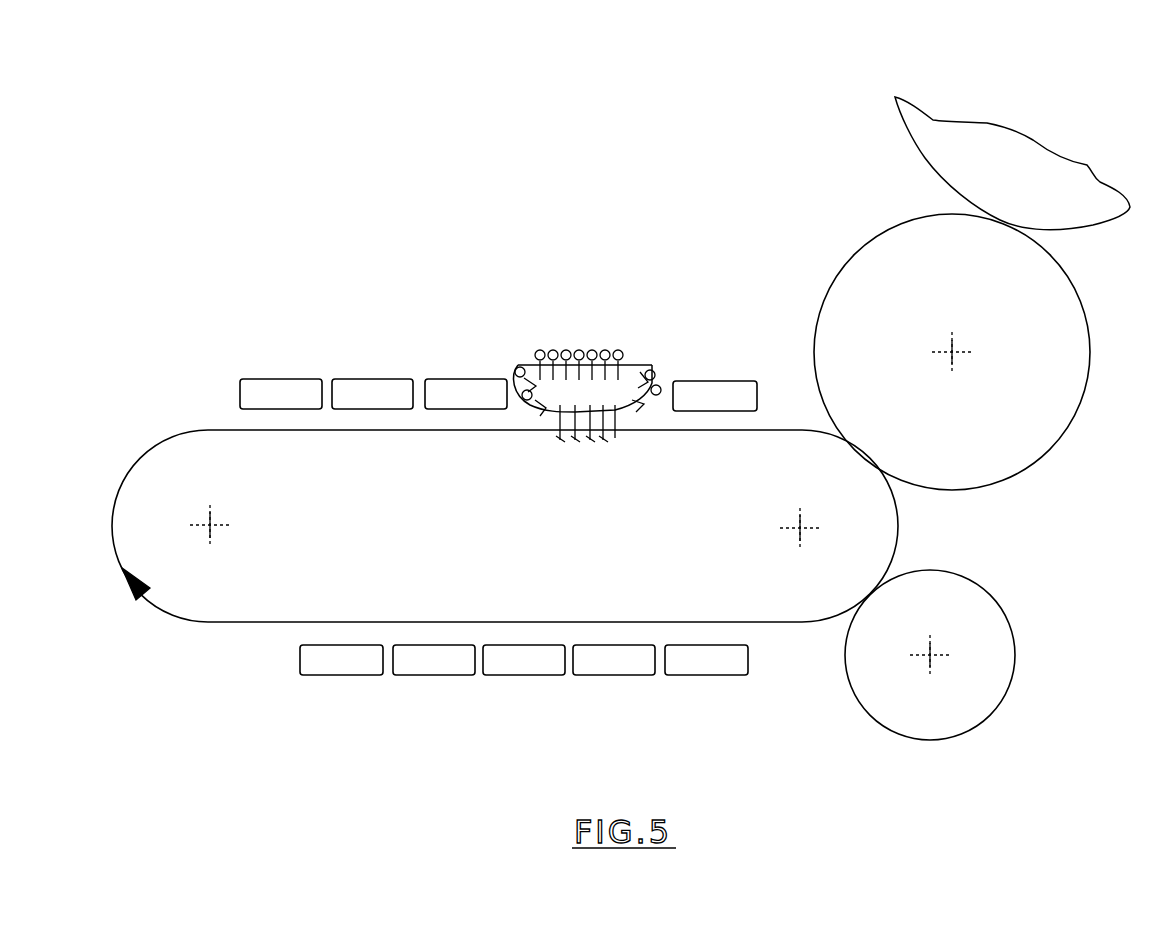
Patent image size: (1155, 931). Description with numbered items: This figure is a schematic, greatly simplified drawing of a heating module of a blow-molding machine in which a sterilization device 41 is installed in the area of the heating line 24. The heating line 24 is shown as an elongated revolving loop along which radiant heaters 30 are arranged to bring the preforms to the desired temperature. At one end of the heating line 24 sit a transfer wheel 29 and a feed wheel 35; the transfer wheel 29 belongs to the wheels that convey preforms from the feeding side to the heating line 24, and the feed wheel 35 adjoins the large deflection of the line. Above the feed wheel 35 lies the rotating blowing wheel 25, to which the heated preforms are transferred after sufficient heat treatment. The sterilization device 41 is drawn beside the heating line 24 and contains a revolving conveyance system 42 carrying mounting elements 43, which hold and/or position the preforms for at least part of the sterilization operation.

The heating line 24 is at (433, 430).
The rotating blowing wheel 25 is at (1007, 130).
The transfer wheel 29 is at (995, 600).
The radiant heaters 30 is at (265, 378).
The feed wheel 35 is at (852, 250).
The sterilization device 41 is at (572, 296).
The revolving conveyance system 42 is at (557, 355).
The mounting elements 43 is at (625, 360).